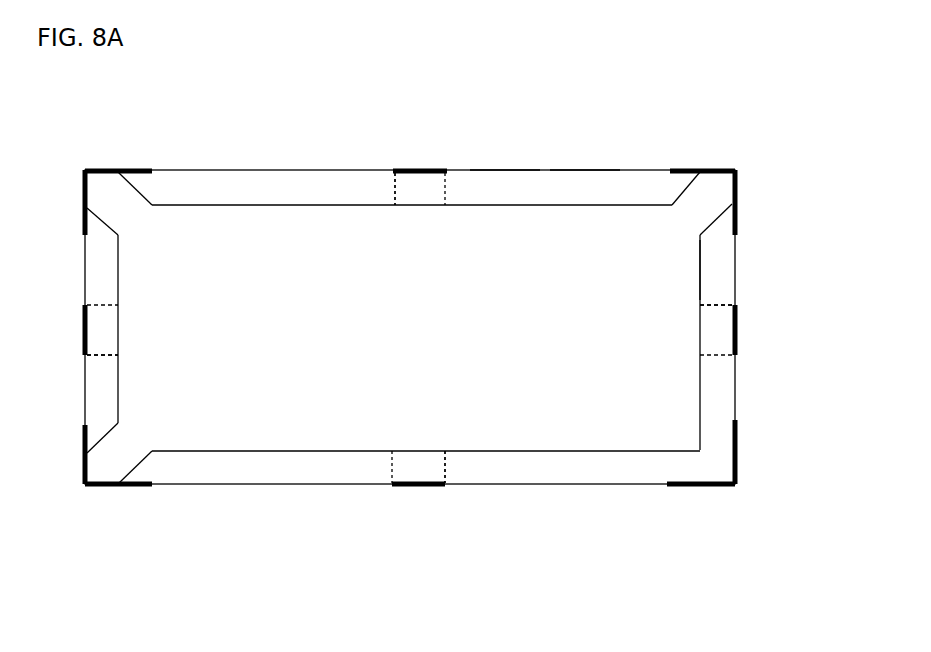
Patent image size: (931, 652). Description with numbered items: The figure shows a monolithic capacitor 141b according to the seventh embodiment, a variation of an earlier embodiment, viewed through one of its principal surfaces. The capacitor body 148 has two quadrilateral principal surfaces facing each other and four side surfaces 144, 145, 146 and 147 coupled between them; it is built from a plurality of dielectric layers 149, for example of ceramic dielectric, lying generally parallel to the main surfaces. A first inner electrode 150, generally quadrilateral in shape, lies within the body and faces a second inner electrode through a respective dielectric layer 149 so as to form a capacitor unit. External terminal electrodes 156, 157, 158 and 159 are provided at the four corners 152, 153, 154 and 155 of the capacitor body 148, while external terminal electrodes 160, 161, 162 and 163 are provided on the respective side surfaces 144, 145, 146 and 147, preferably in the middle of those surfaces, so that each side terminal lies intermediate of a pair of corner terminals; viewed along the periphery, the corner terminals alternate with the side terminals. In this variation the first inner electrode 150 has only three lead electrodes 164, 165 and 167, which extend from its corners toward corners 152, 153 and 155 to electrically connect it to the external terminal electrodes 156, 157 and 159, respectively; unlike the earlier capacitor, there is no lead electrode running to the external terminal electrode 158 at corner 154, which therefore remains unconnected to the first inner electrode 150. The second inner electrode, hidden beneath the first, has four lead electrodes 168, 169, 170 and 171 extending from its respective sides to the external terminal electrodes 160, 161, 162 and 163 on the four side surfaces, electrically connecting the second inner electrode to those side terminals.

The monolithic capacitor 141b is at (92, 143).
The side surface 144 is at (273, 172).
The side surface 145 is at (738, 387).
The side surface 146 is at (247, 487).
The side surface 147 is at (85, 265).
The capacitor body 148 is at (578, 170).
The dielectric layer 149 is at (502, 176).
The first inner electrode 150 is at (703, 252).
The corner of the capacitor body 152 is at (95, 176).
The corner of the capacitor body 153 is at (727, 182).
The corner of the capacitor body 154 is at (716, 487).
The corner of the capacitor body 155 is at (88, 476).
The external terminal electrode 156 is at (85, 199).
The external terminal electrode 157 is at (740, 190).
The external terminal electrode 158 is at (738, 458).
The external terminal electrode 159 is at (83, 468).
The external terminal electrode 160 is at (413, 170).
The external terminal electrode 161 is at (738, 328).
The external terminal electrode 162 is at (414, 487).
The external terminal electrode 163 is at (83, 332).
The lead electrode 164 is at (133, 197).
The lead electrode 165 is at (686, 197).
The lead electrode 167 is at (110, 440).
The lead electrode 168 is at (393, 190).
The lead electrode 169 is at (703, 305).
The lead electrode 170 is at (447, 462).
The lead electrode 171 is at (106, 357).